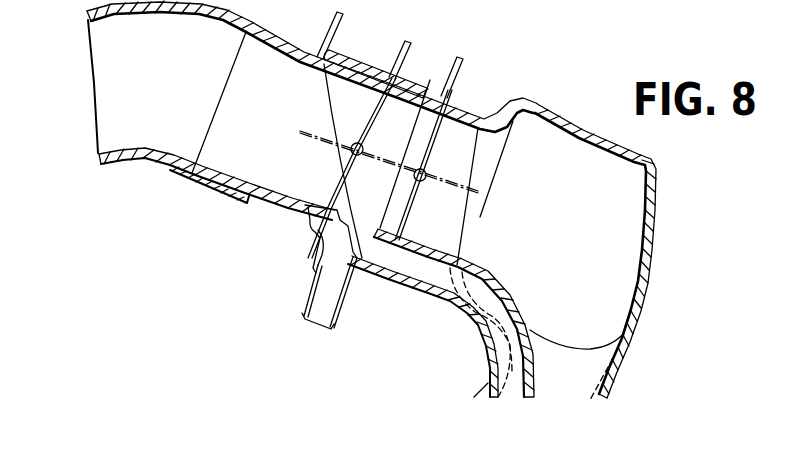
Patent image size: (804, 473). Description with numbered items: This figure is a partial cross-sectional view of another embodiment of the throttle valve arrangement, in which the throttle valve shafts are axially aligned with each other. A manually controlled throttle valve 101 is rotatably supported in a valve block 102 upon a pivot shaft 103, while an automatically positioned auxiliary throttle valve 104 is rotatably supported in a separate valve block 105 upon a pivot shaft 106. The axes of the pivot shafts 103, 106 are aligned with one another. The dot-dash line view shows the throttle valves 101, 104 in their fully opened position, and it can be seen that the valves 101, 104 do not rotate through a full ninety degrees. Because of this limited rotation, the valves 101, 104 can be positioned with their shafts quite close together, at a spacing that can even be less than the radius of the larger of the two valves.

The manually controlled throttle valve 101 is at (346, 172).
The valve block 102 is at (343, 45).
The pivot shaft 103 is at (352, 144).
The auxiliary throttle valve 104 is at (432, 165).
The valve block 105 is at (462, 112).
The pivot shaft 106 is at (432, 168).